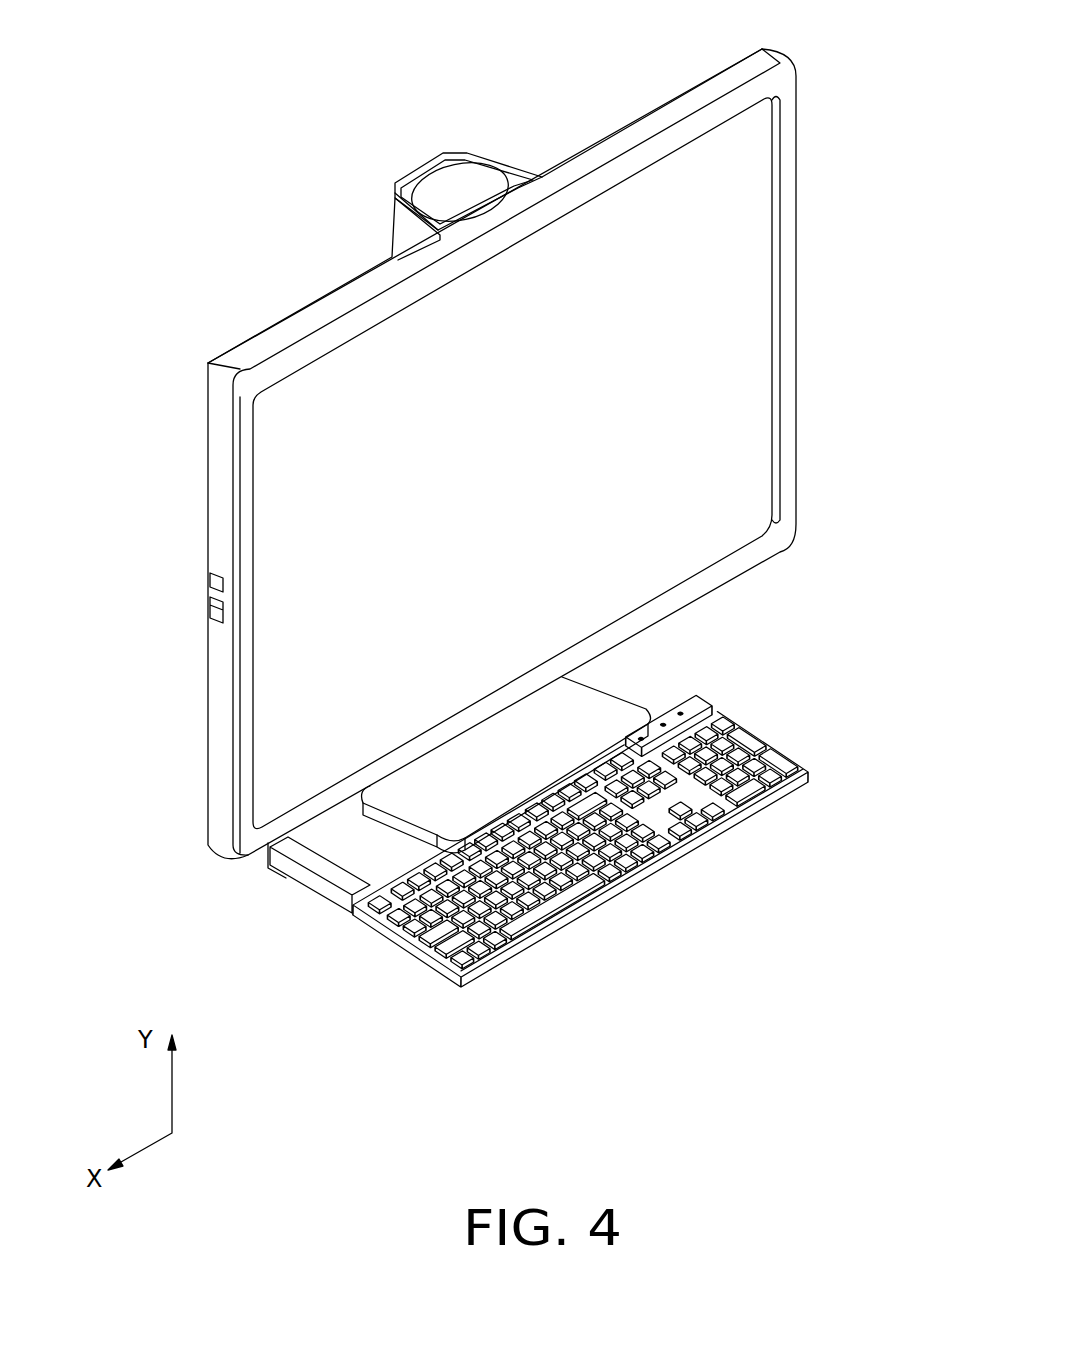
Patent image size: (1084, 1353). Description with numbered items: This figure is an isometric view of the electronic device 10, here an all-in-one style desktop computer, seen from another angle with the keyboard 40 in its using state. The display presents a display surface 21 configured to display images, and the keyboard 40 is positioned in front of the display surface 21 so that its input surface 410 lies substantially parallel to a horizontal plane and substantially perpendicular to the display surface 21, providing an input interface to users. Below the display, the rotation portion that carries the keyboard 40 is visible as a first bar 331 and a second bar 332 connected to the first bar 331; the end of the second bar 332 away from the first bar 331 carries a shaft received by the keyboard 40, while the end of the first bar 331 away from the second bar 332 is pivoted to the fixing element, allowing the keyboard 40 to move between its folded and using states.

The electronic device 10 is at (418, 42).
The display surface 21 is at (718, 288).
The first bar 331 is at (268, 855).
The second bar 332 is at (313, 883).
The keyboard 40 is at (488, 1024).
The input surface 410 is at (678, 798).